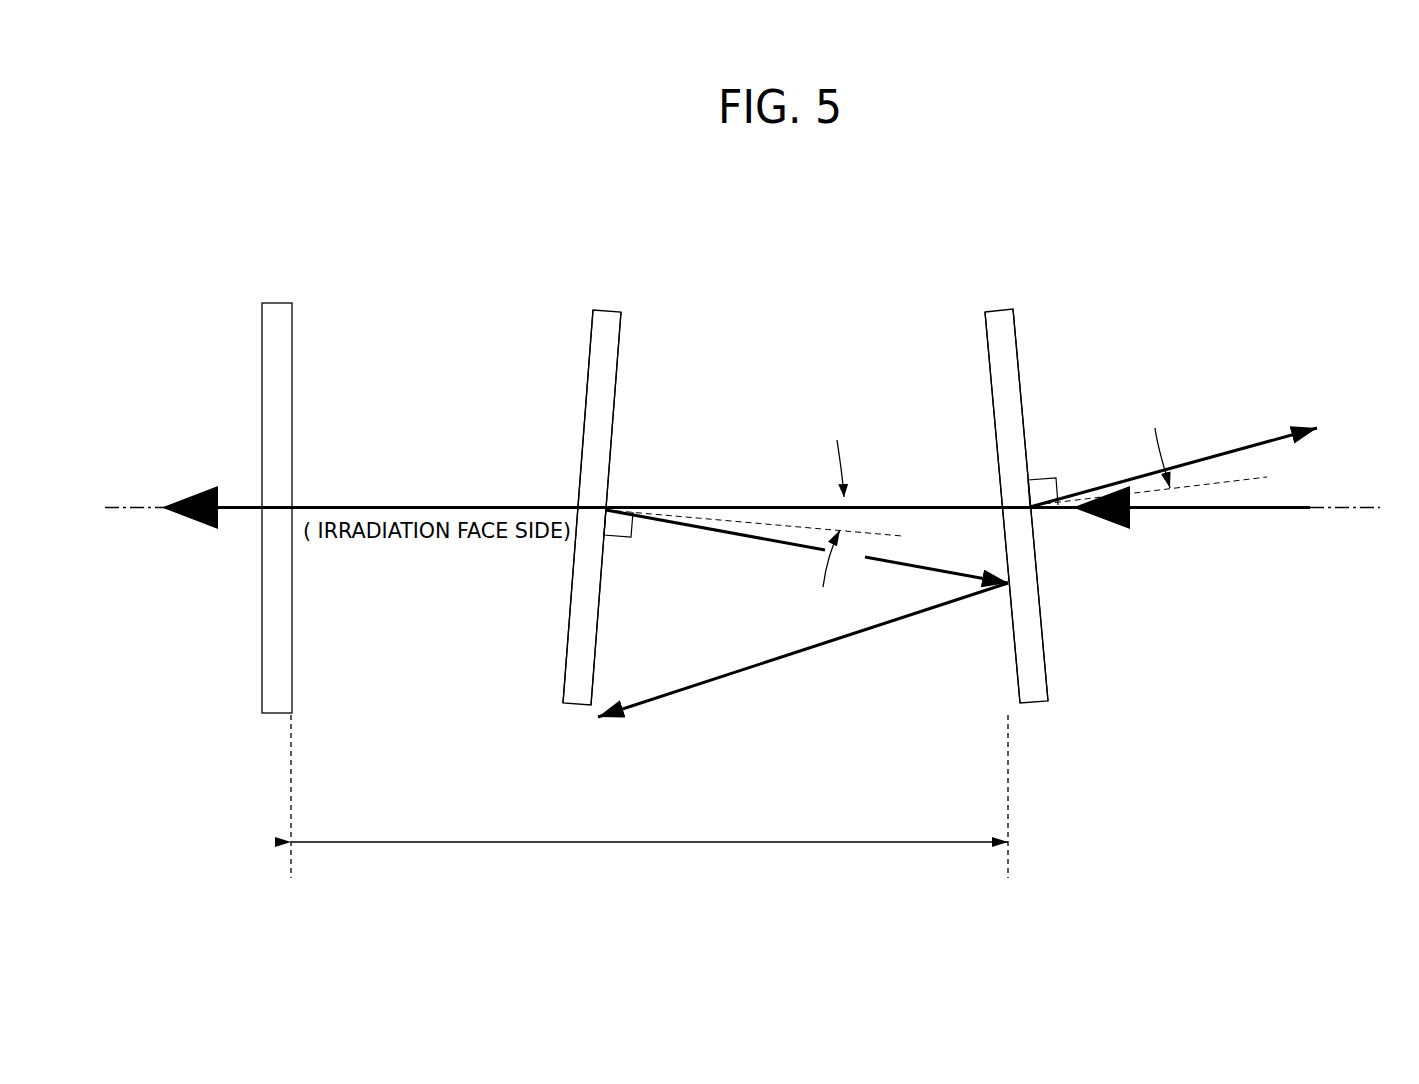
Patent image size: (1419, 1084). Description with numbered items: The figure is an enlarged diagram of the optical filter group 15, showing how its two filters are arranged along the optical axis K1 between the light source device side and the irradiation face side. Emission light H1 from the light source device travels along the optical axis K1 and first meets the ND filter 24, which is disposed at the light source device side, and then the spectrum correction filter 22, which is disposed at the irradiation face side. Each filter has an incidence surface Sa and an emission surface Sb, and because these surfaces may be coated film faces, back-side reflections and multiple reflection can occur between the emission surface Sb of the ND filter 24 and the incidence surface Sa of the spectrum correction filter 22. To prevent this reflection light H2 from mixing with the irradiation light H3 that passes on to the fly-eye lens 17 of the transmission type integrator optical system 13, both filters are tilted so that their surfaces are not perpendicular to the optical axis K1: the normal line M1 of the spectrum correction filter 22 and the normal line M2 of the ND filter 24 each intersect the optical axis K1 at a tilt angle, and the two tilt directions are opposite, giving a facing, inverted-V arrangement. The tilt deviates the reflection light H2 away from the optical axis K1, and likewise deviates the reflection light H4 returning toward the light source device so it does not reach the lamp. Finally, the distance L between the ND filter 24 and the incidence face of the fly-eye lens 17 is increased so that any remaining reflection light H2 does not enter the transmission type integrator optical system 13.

The transmission type integrator optical system 13 is at (277, 272).
The optical filter group 15 is at (812, 245).
The fly-eye lens 17 is at (293, 339).
The spectrum correction filter 22 is at (612, 309).
The ND filter 24 is at (1000, 311).
The incidence surface Sa is at (618, 368).
The emission surface Sb is at (588, 375).
The emission light H1 is at (1148, 512).
The reflection light H2 is at (802, 655).
The irradiation light H3 is at (237, 510).
The reflection light returning to the light source device H4 is at (1221, 452).
The normal line of the spectrum correction filter M1 is at (773, 529).
The normal line of the ND filter M2 is at (1174, 485).
The optical axis K1 is at (760, 508).
The distance L is at (649, 796).